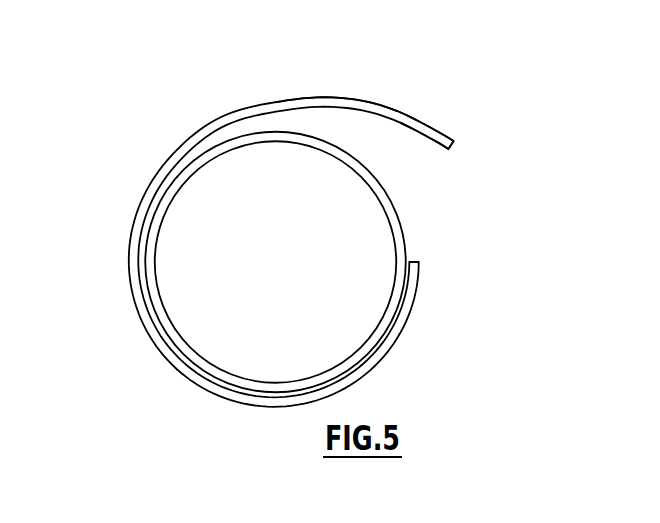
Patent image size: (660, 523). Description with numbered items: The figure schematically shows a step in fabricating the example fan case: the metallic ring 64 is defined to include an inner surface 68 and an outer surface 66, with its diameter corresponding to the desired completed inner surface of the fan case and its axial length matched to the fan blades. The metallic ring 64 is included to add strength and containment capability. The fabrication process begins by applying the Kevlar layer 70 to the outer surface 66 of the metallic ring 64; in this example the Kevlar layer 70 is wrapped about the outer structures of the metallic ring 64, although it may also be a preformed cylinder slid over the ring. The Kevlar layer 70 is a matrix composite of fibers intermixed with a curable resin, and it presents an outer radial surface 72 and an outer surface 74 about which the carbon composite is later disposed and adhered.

The metallic ring 64 is at (317, 290).
The outer surface 66 is at (414, 228).
The inner surface 68 is at (380, 247).
The Kevlar layer 70 is at (388, 347).
The outer radial surface 72 is at (405, 93).
The outer surface 74 is at (420, 148).